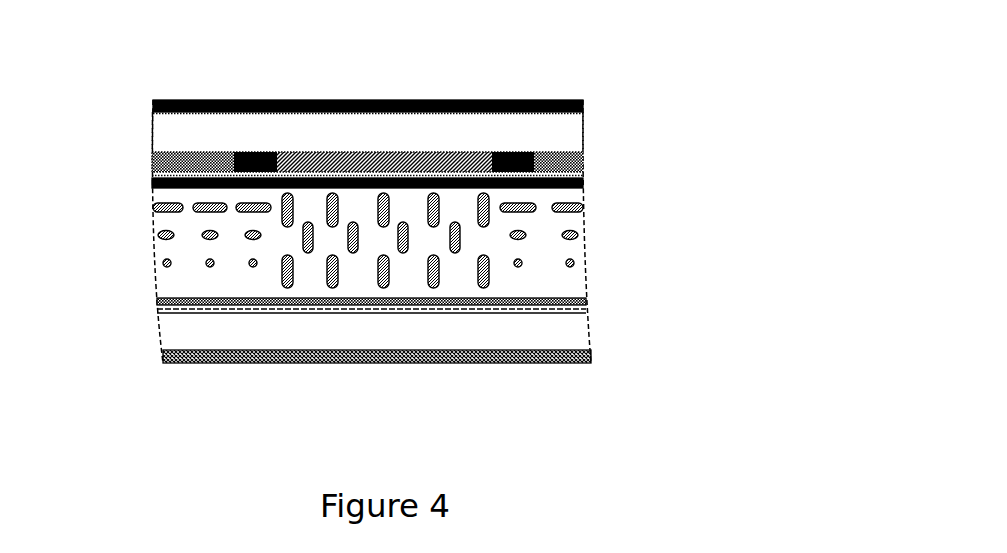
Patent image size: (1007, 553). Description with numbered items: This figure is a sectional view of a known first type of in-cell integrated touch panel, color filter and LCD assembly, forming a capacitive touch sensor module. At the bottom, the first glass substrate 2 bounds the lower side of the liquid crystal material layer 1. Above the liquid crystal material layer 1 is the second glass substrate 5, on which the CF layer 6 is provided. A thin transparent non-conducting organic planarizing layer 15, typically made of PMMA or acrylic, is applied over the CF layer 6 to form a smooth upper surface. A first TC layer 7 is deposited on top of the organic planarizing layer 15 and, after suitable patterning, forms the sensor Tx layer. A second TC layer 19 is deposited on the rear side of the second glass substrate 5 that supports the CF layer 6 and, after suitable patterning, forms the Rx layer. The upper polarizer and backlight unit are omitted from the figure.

The liquid crystal material layer 1 is at (183, 282).
The first glass substrate 2 is at (583, 332).
The second glass substrate 5 is at (570, 128).
The CF layer 6 is at (587, 161).
The first TC layer 7 is at (586, 183).
The organic planarizing layer 15 is at (148, 173).
The second TC layer 19 is at (587, 97).